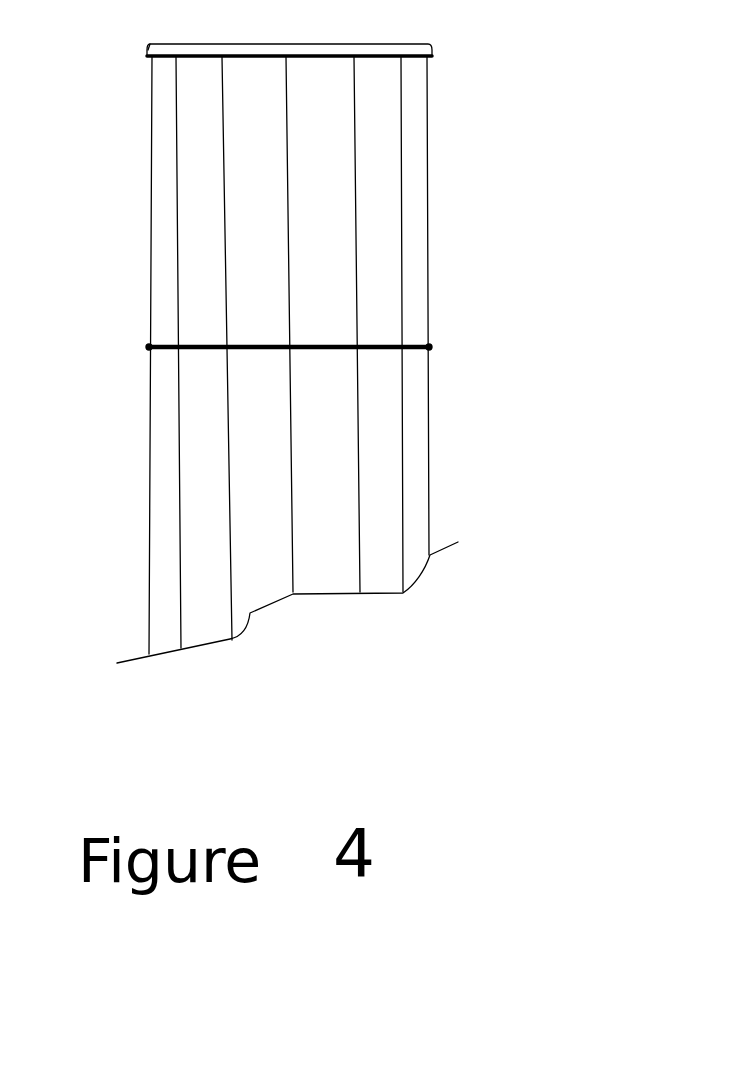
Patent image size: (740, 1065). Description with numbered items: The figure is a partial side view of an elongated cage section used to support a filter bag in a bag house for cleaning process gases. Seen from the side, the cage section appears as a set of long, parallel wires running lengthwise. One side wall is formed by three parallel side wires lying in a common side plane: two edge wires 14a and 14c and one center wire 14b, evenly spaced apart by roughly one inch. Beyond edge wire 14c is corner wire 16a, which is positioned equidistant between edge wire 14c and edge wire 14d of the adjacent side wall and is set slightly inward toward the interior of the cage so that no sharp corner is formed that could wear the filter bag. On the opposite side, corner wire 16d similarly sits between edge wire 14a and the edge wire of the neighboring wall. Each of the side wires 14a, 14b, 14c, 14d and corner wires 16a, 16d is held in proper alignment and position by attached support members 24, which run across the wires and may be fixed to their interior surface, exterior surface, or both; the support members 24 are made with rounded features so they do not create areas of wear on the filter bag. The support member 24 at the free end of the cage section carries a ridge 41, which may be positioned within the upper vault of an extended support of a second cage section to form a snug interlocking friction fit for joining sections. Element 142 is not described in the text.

The support member 24 is at (434, 51).
The ridge 41 is at (148, 50).
The edge line 142 is at (147, 612).
The corner wire 16d is at (178, 648).
The edge wire 14a is at (232, 625).
The center wire 14b is at (293, 588).
The edge wire 14c is at (360, 588).
The corner wire 16a is at (409, 580).
The edge wire 14d is at (431, 523).